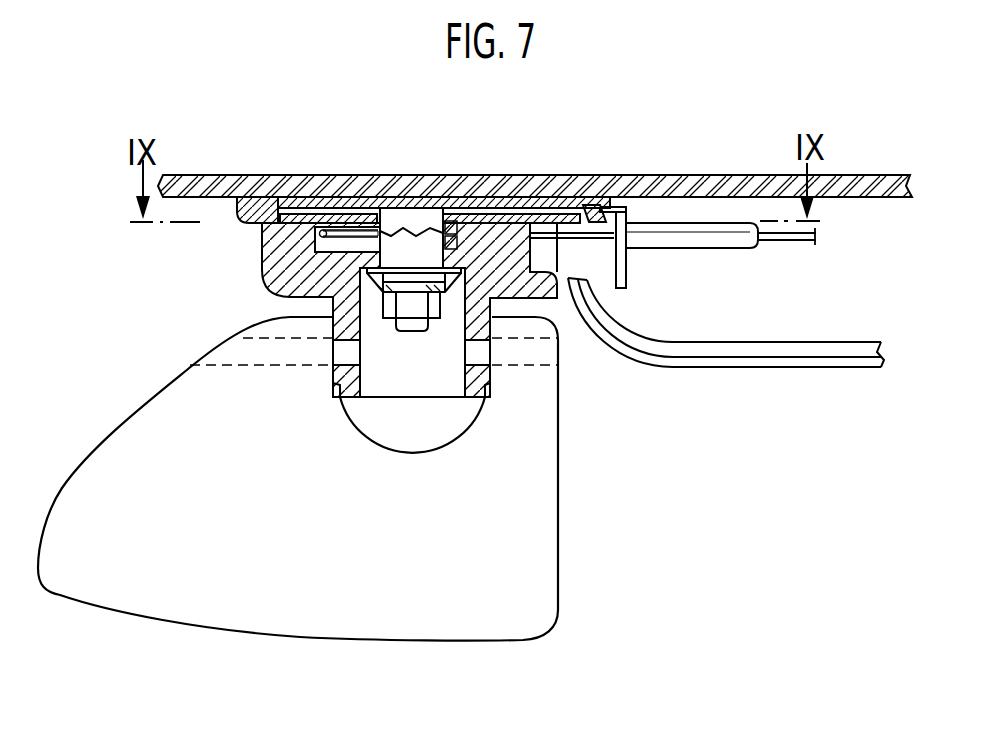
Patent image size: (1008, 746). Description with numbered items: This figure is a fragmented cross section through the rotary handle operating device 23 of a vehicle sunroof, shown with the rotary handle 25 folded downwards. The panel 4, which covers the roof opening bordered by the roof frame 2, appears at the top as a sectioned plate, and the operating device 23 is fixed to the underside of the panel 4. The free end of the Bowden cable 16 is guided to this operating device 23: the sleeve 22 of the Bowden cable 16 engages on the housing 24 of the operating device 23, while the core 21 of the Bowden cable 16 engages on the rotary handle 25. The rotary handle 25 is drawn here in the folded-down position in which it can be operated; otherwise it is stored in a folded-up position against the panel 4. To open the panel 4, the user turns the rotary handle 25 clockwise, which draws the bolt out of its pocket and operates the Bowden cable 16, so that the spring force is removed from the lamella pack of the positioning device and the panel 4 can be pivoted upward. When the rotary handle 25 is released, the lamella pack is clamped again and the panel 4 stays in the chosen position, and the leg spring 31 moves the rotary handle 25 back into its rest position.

The roof frame 2 is at (851, 342).
The panel 4 is at (868, 186).
The Bowden cable 16 is at (692, 258).
The core 21 is at (801, 243).
The sleeve 22 is at (734, 242).
The rotary handle operating device 23 is at (249, 276).
The housing 24 is at (623, 290).
The rotary handle 25 is at (543, 526).
The leg spring 31 is at (353, 233).